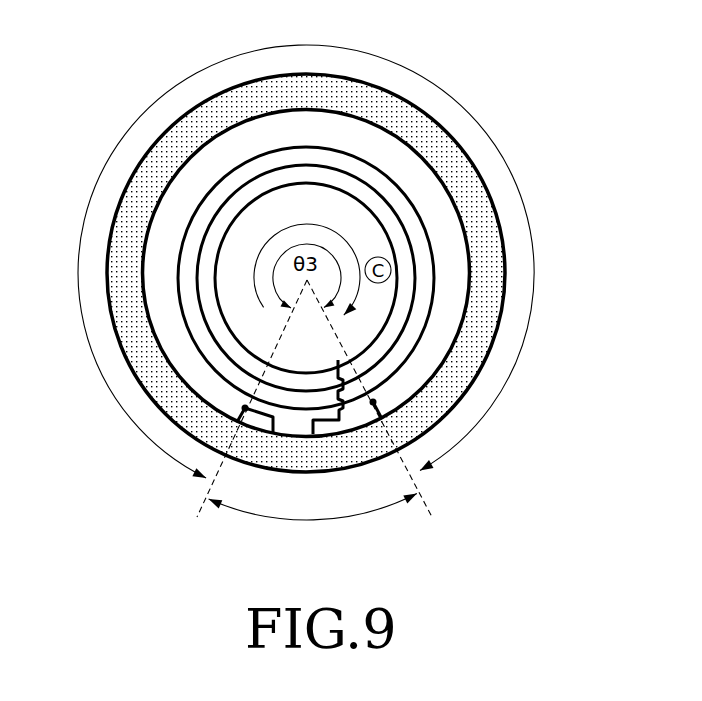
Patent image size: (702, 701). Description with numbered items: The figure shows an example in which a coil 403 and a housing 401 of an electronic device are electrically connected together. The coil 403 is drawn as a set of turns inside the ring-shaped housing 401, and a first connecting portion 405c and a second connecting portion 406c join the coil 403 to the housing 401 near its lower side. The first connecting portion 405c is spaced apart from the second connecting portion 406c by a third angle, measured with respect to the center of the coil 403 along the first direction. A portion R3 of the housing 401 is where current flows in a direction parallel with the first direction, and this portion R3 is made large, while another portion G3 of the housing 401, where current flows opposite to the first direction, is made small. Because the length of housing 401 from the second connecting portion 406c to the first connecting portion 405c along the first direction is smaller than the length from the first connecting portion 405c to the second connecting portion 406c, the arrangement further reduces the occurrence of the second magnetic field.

The housing 401 is at (466, 199).
The coil 403 is at (420, 157).
The first connecting portion 405c is at (242, 426).
The second connecting portion 406c is at (376, 403).
The portion of the housing where current flows parallel with the first direction R3 is at (327, 261).
The portion of the housing where current flows opposite the first direction G3 is at (313, 528).